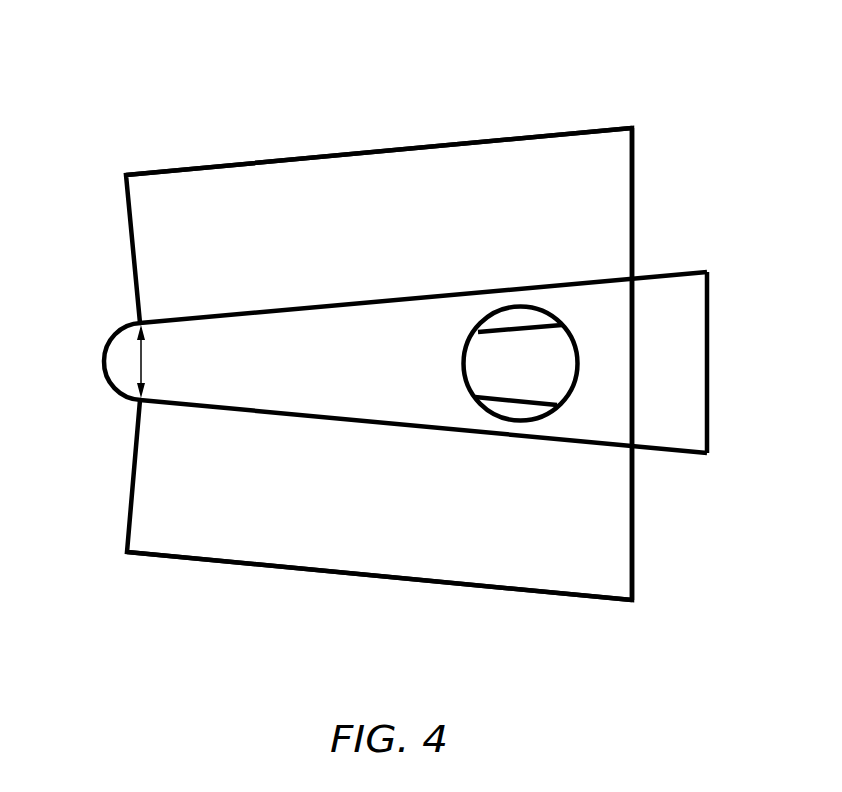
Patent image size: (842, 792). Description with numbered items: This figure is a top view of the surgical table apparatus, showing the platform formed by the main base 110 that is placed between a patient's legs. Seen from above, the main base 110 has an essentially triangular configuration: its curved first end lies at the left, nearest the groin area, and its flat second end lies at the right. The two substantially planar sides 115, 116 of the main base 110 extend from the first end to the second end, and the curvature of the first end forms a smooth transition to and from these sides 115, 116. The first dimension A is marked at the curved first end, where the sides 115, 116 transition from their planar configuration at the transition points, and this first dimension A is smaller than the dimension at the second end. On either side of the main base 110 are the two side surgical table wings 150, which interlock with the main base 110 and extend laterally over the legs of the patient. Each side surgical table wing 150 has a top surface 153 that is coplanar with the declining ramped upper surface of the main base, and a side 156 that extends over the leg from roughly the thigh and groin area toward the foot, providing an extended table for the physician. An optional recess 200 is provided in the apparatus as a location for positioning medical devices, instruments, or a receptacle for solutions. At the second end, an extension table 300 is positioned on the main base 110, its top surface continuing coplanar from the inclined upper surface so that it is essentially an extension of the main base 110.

The main base 110 is at (357, 406).
The side 115 is at (340, 420).
The side 116 is at (362, 303).
The side surgical table wing 150 is at (247, 190).
The top surface 153 is at (600, 170).
The side 156 is at (435, 145).
The recess 200 is at (545, 420).
The extension table 300 is at (693, 272).
The first dimension A is at (143, 362).